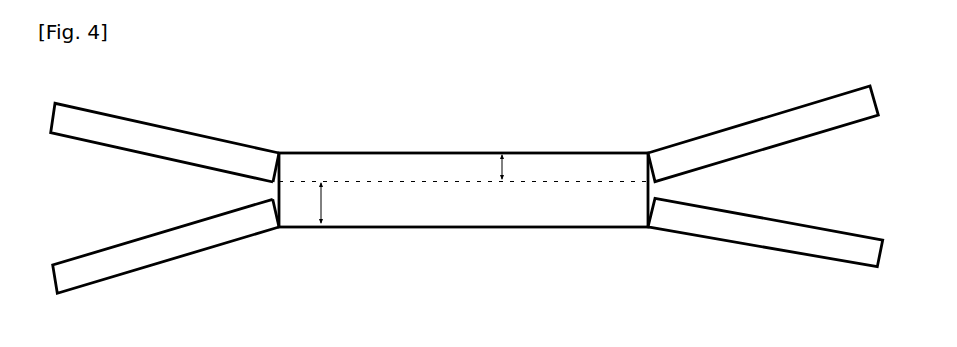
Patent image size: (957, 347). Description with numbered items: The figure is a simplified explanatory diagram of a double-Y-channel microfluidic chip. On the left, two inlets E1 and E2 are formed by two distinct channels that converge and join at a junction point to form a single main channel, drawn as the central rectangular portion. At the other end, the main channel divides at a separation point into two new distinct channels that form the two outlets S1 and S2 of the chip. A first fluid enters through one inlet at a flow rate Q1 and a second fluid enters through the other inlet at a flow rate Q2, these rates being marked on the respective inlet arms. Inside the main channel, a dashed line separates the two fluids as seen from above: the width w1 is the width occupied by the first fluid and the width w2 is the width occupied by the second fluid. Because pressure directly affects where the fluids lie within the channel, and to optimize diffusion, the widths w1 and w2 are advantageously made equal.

The inlet E1 is at (165, 132).
The inlet E2 is at (163, 246).
The outlet S1 is at (763, 128).
The outlet S2 is at (765, 232).
The flow rate Q1 is at (235, 159).
The flow rate Q2 is at (235, 222).
The width occupied by fluid F1 w1 is at (489, 166).
The width occupied by fluid F2 w2 is at (331, 203).